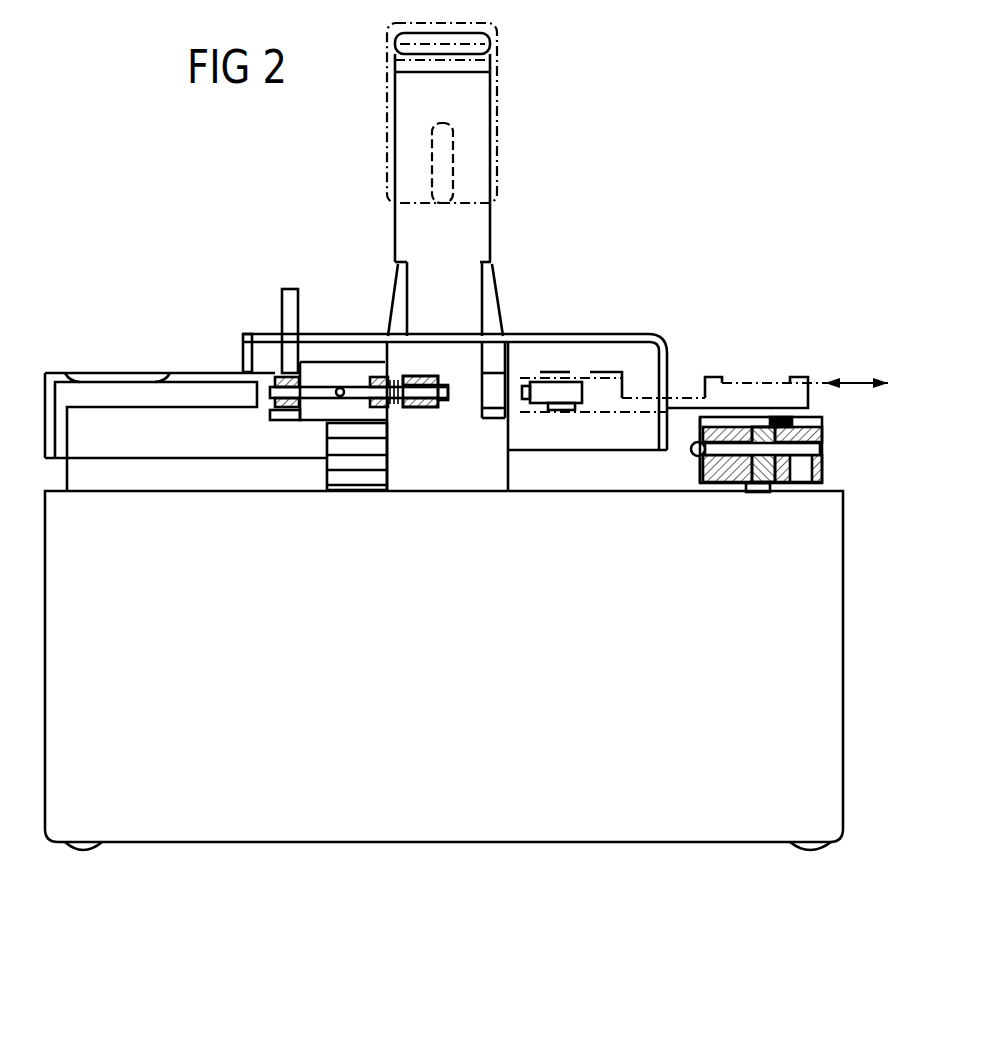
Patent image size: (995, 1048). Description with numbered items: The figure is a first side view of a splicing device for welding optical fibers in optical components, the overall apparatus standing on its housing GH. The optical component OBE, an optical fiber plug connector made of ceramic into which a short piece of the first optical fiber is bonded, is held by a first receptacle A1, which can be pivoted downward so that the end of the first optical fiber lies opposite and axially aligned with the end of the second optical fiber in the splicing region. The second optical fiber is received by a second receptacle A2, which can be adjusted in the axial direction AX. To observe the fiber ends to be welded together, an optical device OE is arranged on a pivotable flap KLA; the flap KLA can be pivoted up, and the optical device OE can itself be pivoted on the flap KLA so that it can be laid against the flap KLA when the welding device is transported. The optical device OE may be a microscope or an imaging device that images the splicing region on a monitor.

The optical device OE is at (518, 102).
The first receptacle A1 is at (338, 290).
The pivotable flap KLA is at (580, 333).
The second receptacle A2 is at (710, 322).
The axial direction AX is at (862, 380).
The optical component OBE is at (424, 412).
The housing base GH is at (656, 844).